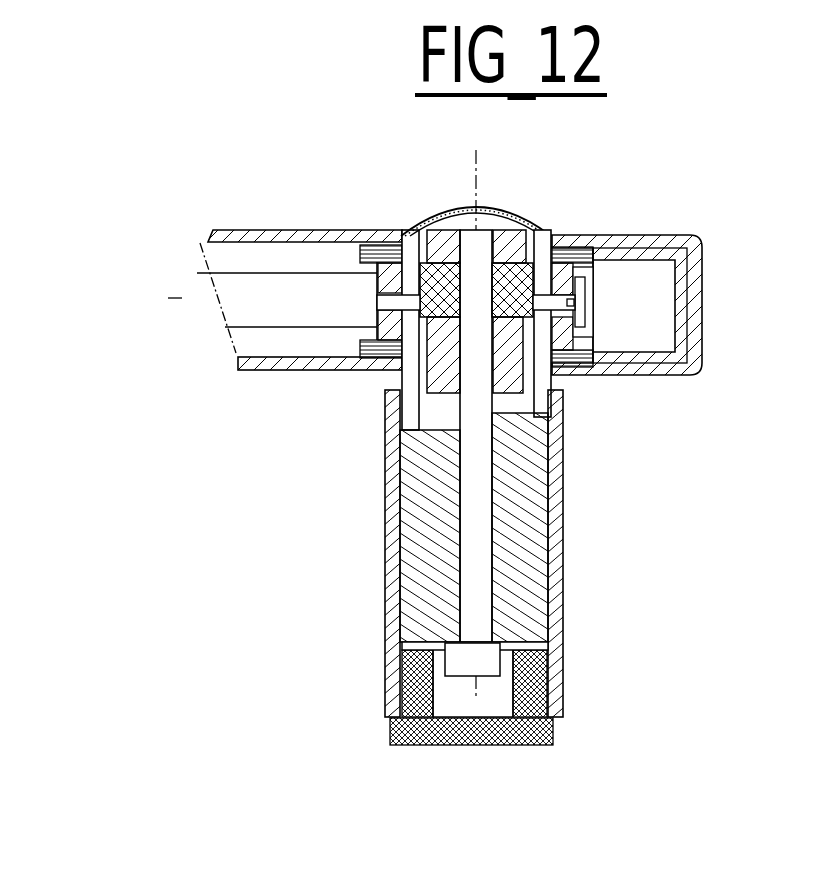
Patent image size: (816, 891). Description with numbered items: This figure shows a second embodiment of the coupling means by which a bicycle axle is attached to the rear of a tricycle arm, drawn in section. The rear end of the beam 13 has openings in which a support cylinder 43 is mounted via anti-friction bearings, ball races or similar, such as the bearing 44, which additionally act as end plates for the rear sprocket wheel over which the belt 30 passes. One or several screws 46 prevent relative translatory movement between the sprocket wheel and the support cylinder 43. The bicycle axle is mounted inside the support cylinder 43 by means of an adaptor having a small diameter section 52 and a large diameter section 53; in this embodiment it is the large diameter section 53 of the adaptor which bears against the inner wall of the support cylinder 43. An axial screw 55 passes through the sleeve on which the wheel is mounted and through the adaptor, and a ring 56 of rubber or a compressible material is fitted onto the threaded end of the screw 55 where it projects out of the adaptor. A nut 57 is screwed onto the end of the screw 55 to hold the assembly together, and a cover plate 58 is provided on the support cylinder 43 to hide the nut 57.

The beam 13 is at (232, 236).
The belt 30 is at (220, 292).
The support cylinder 43 is at (410, 238).
The anti-friction bearing 44 is at (557, 233).
The screw 46 is at (518, 297).
The small diameter section 52 is at (443, 342).
The large diameter section 53 is at (443, 407).
The axial screw 55 is at (478, 657).
The ring 56 is at (557, 305).
The nut 57 is at (508, 243).
The cover plate 58 is at (437, 212).